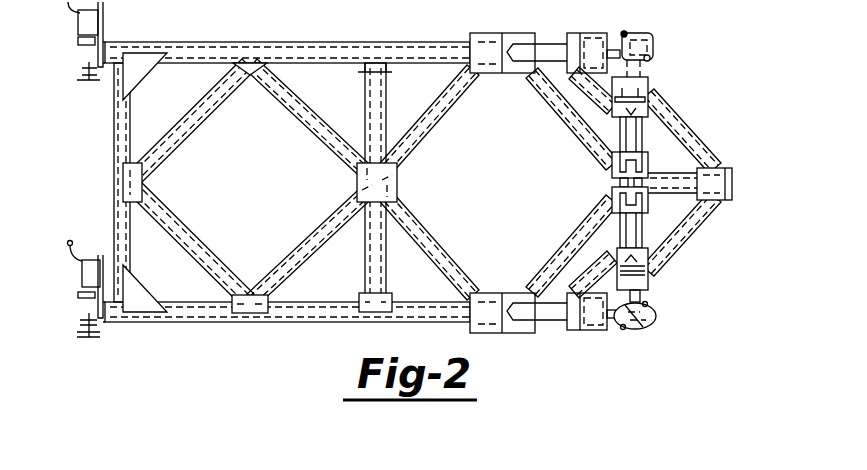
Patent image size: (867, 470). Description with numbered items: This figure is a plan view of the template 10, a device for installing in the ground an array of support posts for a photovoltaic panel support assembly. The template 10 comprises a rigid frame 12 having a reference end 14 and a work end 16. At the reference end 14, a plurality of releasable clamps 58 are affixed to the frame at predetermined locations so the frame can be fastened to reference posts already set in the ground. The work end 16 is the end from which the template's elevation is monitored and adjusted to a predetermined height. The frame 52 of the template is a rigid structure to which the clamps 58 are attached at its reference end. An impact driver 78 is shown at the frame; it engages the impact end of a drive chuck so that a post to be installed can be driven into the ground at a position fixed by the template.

The template 10 is at (227, 368).
The rigid frame 12 is at (305, 315).
The reference end 14 is at (97, 162).
The work end 16 is at (715, 132).
The rigid frame 52 is at (315, 53).
The releasable clamps 58 is at (73, 61).
The impact driver 78 is at (650, 37).